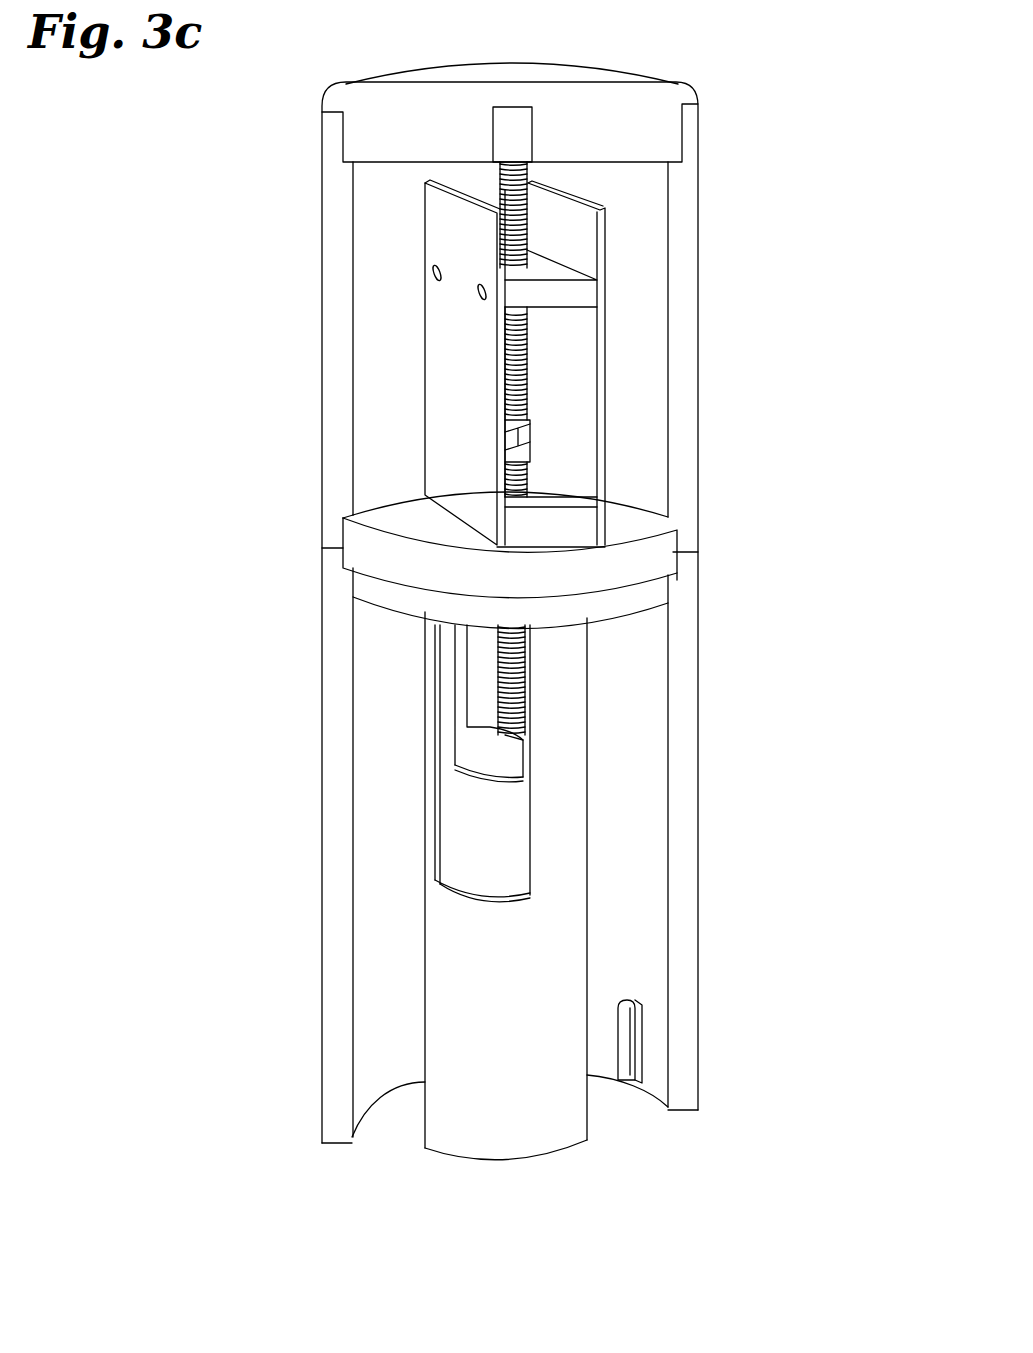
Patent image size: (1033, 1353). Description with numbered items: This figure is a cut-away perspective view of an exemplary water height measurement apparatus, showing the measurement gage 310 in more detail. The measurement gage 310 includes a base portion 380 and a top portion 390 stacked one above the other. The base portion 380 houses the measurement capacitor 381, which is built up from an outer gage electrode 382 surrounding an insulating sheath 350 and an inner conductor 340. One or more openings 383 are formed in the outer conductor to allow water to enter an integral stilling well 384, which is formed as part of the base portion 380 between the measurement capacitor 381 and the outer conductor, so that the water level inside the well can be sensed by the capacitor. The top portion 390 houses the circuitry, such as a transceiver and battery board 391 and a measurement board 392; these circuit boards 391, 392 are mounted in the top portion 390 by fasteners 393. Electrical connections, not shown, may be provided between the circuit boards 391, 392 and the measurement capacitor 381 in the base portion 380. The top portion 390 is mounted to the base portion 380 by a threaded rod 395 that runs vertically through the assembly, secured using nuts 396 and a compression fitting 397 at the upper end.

The measurement gage 310 is at (250, 200).
The base portion 380 is at (698, 667).
The measurement capacitor 381 is at (472, 1162).
The outer gage electrode 382 is at (477, 898).
The openings 383 is at (617, 1037).
The integral stilling well 384 is at (618, 1113).
The top portion 390 is at (703, 255).
The transceiver and battery board 391 is at (485, 385).
The measurement board 392 is at (589, 245).
The fasteners 393 is at (481, 284).
The threaded rod 395 is at (528, 398).
The nuts 396 is at (528, 453).
The compression fitting 397 is at (535, 138).
The inner conductor 340 is at (498, 738).
The insulating sheath 350 is at (512, 783).